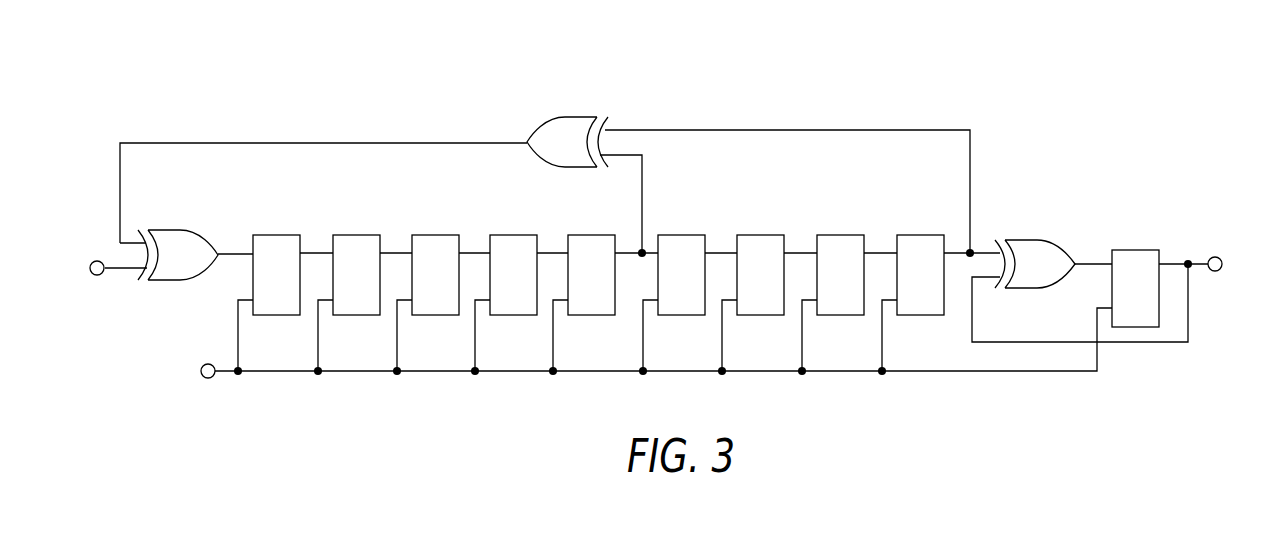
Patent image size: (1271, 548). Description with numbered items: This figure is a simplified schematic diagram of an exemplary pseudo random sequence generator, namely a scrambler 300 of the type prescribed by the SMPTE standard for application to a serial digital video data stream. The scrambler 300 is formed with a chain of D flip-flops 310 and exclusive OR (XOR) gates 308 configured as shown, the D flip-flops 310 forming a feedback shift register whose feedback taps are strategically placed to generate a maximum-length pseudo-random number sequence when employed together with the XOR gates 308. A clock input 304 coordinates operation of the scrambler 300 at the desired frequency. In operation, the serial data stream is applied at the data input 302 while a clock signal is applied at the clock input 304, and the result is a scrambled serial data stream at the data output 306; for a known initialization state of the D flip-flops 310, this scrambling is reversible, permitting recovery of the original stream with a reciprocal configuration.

The scrambler 300 is at (1018, 84).
The data input 302 is at (93, 258).
The clock input 304 is at (208, 379).
The data output 306 is at (1215, 272).
The exclusive OR (XOR) gates 308 is at (177, 273).
The D flip-flops 310 is at (590, 240).